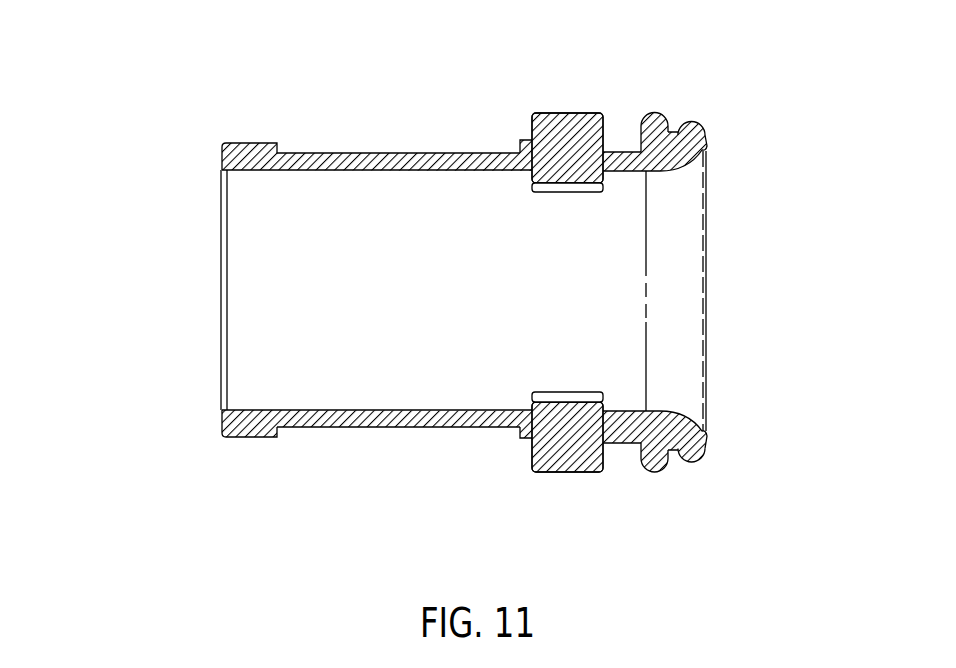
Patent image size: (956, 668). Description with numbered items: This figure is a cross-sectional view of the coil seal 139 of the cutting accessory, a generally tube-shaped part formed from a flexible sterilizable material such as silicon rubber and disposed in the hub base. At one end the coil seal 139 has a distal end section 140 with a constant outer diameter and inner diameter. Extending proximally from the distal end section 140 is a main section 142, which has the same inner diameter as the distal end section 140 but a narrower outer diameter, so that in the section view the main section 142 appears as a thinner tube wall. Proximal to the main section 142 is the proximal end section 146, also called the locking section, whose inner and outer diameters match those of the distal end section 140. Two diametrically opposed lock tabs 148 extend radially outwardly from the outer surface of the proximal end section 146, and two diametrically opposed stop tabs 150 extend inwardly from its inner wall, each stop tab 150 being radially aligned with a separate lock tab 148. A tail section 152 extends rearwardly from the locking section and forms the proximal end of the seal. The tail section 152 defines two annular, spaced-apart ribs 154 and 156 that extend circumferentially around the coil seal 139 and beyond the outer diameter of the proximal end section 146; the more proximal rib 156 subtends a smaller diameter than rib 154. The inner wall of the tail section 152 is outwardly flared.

The coil seal 139 is at (163, 174).
The distal end section 140 is at (260, 438).
The main section 142 is at (342, 153).
The proximal end section 146 is at (518, 438).
The lock tab 148 is at (563, 113).
The stop tab 150 is at (558, 184).
The tail section 152 is at (707, 141).
The rib 154 is at (663, 117).
The rib 156 is at (706, 122).